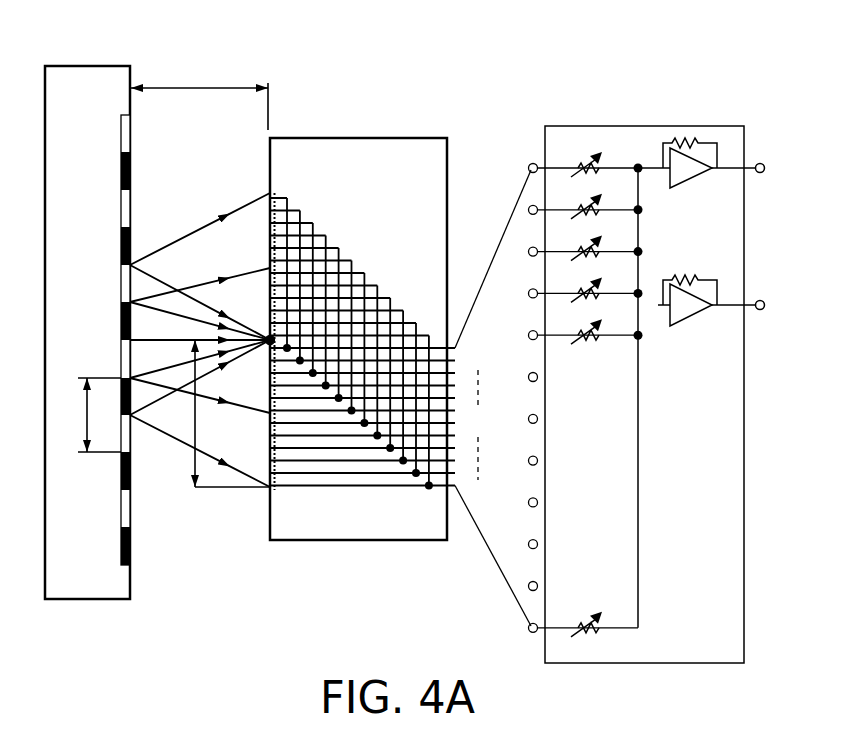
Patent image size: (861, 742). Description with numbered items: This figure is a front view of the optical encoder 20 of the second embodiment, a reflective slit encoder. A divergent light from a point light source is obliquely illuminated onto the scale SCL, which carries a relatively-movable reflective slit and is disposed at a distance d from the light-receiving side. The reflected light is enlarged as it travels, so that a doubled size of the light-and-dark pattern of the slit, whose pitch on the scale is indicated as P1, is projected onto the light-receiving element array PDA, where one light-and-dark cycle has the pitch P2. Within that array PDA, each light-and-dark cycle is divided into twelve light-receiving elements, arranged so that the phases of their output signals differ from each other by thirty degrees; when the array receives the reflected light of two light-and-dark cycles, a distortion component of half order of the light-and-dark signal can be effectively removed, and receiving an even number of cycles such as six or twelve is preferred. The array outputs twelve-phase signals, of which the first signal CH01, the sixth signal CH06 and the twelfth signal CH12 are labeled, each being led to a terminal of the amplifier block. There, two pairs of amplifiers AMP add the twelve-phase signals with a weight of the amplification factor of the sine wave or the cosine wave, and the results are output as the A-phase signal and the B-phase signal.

The optical encoder 20 is at (655, 84).
The scale SCL is at (131, 172).
The light-receiving element array PDA is at (362, 339).
The amplifiers AMP is at (644, 376).
The distance d is at (199, 98).
The pitch P1 is at (89, 415).
The pitch P2 is at (210, 416).
The twelve-phase signal CH01 is at (493, 268).
The twelve-phase signal CH06 is at (491, 425).
The twelve-phase signal CH12 is at (493, 554).